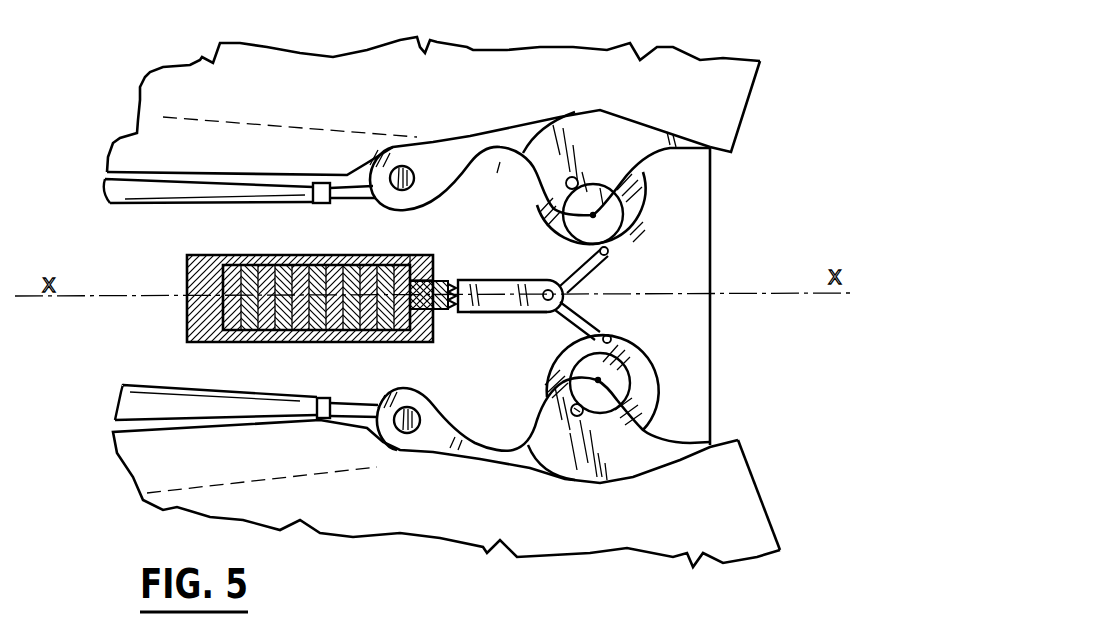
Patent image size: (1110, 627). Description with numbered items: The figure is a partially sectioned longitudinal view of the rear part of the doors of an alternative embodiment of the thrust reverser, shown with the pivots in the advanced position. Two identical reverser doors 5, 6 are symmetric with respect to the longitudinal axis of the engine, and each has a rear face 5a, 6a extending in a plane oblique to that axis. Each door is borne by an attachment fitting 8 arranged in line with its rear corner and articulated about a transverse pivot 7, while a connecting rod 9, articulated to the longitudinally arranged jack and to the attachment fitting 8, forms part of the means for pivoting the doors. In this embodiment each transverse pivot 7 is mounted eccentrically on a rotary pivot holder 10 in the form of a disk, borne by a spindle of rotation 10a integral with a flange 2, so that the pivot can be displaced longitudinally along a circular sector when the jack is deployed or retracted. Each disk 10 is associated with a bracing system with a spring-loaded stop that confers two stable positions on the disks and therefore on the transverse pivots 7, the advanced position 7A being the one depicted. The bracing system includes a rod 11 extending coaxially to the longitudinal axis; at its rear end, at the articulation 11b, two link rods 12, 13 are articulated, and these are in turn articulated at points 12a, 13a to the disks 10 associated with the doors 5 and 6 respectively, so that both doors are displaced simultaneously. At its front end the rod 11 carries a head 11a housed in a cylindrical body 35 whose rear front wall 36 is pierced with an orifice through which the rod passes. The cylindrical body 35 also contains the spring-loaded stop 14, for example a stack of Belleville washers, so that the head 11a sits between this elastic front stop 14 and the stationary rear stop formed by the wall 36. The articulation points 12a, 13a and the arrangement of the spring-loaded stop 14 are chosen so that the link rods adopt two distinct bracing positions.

The flange 2 is at (490, 402).
The reverser door 5 is at (697, 78).
The rear face of door 5a is at (752, 96).
The reverser door 6 is at (177, 475).
The rear face of door 6a is at (760, 497).
The transverse pivot 7 is at (562, 184).
The advanced position of transverse pivot 7A is at (599, 158).
The attachment fitting 8 is at (430, 182).
The connecting rod 9 is at (178, 208).
The rotary pivot holder 10 is at (638, 193).
The spindle of rotation 10a is at (620, 214).
The rod 11 is at (486, 290).
The head of rod 11a is at (397, 253).
The articulation point of link rods on rod 11b is at (540, 316).
The link rod 12 is at (578, 264).
The articulation point of link rod on disk 12a is at (610, 251).
The link rod 13 is at (570, 302).
The articulation point of link rod on disk 13a is at (610, 336).
The spring-loaded stop 14 is at (343, 330).
The cylindrical body 35 is at (200, 323).
The rear front wall 36 is at (436, 328).